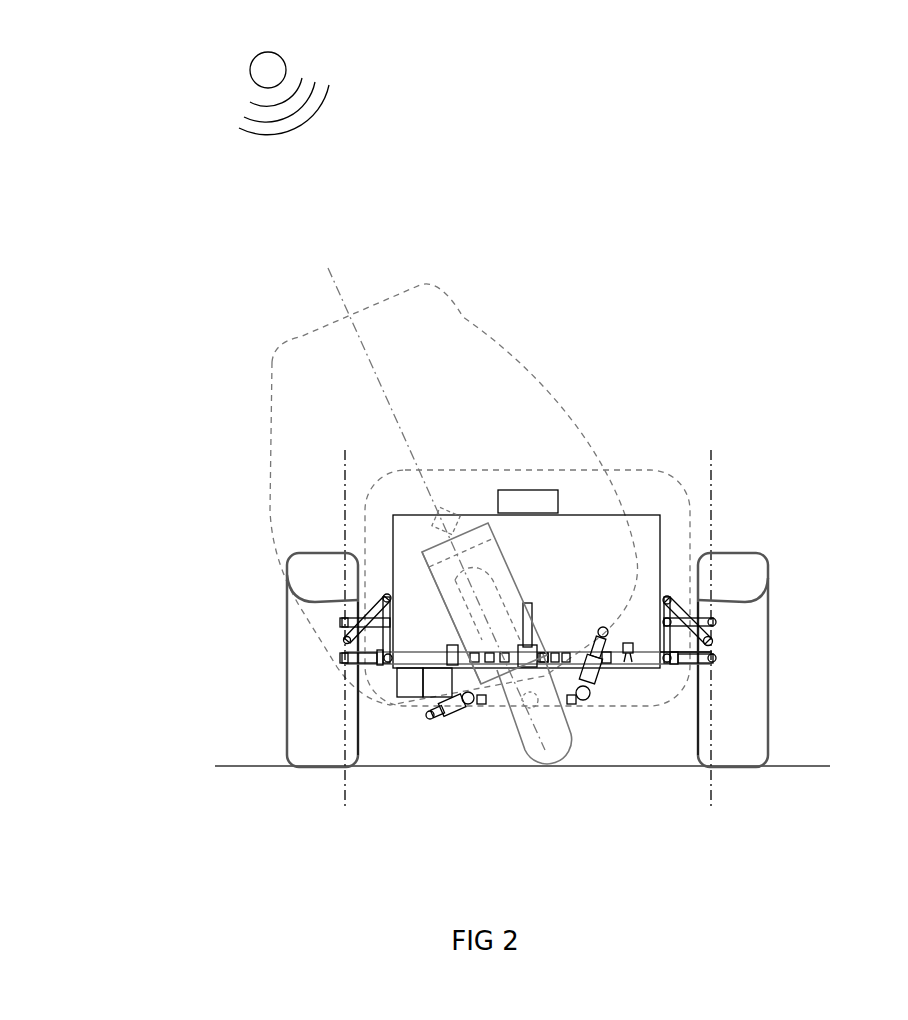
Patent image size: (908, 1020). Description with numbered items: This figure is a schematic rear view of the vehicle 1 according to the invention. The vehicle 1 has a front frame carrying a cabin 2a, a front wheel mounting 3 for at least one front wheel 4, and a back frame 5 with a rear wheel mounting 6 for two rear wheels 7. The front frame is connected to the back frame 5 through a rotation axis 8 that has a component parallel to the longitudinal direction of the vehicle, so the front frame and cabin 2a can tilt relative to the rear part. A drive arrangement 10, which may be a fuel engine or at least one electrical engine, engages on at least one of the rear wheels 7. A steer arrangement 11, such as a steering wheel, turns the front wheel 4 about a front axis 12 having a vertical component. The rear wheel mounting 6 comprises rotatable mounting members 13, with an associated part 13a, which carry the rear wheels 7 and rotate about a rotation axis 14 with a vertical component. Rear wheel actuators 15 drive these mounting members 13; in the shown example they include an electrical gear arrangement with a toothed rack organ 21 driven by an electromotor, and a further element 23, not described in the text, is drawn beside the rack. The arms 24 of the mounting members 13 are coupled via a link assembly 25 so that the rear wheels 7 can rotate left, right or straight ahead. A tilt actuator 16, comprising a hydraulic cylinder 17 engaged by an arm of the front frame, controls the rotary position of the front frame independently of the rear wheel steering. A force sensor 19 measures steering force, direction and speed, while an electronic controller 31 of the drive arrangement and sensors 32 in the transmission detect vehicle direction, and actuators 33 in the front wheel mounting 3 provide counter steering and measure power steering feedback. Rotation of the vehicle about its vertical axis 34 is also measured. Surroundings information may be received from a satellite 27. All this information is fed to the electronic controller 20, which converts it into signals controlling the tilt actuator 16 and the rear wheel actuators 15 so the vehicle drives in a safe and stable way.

The vehicle 1 is at (118, 600).
The cabin 2a is at (272, 402).
The front wheel mounting 3 is at (440, 600).
The front wheel 4 is at (463, 630).
The back frame 5 is at (357, 533).
The rear wheel mounting 6 is at (683, 603).
The rear wheels 7 is at (290, 668).
The rotation axis 8 is at (529, 710).
The drive arrangement 10 is at (578, 513).
The steer arrangement 11 is at (476, 542).
The front axis 12 is at (460, 548).
The rotatable mounting members 13 is at (702, 617).
The mounting member part 13a is at (672, 640).
The rotation axis 14 is at (714, 643).
The rear wheel actuators 15 is at (628, 654).
The tilt actuator 16 is at (480, 704).
The hydraulic cylinder 17 is at (460, 707).
The force sensor 19 is at (432, 521).
The electronic controller 20 is at (548, 487).
The toothed rack organ 21 is at (559, 647).
The guide block 23 is at (534, 655).
The arms 24 is at (693, 662).
The link assembly 25 is at (645, 664).
The satellite 27 is at (255, 66).
The electronic controller of drive arrangement 31 is at (405, 689).
The sensors 32 is at (436, 690).
The actuators 33 is at (510, 670).
The vertical axis 34 is at (523, 603).